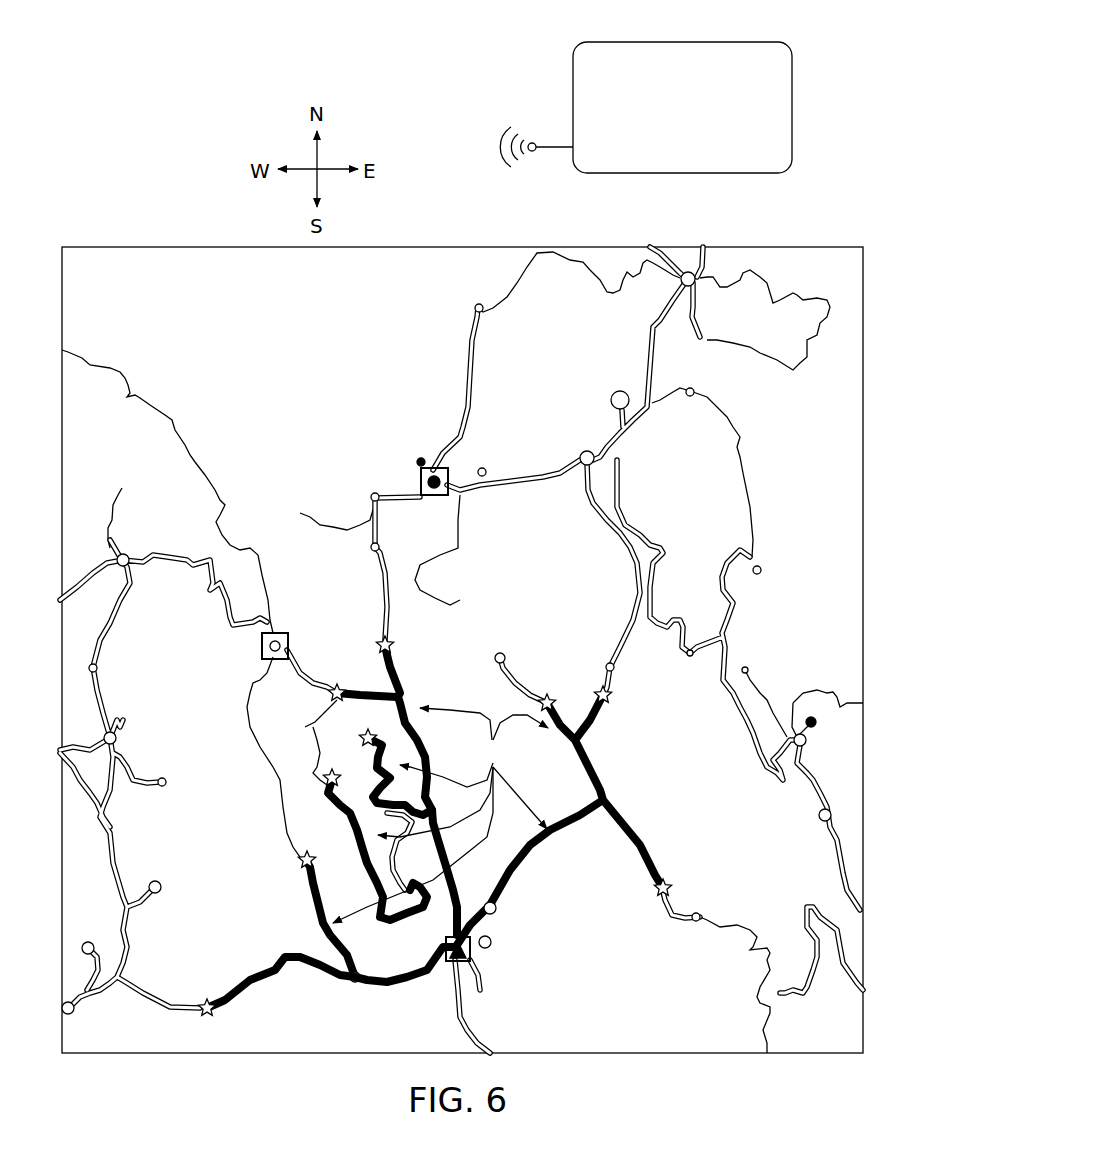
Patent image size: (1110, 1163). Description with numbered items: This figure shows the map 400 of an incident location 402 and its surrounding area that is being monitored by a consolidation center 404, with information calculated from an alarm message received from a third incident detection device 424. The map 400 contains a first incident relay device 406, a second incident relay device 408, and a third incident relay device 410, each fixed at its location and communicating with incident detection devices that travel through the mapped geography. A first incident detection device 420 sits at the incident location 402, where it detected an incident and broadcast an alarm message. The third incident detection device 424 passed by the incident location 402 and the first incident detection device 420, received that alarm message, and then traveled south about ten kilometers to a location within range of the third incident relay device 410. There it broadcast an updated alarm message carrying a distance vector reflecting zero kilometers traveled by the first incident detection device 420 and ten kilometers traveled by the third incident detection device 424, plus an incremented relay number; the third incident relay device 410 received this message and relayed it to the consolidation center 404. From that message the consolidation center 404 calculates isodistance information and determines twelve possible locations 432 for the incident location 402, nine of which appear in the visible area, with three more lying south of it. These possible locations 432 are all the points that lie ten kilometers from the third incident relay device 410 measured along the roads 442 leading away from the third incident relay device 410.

The map 400 is at (153, 232).
The incident location 402 is at (398, 655).
The consolidation center 404 is at (740, 42).
The first incident relay device 406 is at (424, 474).
The second incident relay device 408 is at (260, 640).
The third incident relay device 410 is at (472, 955).
The first incident detection device 420 is at (390, 640).
The third incident detection device 424 is at (445, 985).
The possible locations 432 is at (377, 637).
The roads 442 is at (440, 815).